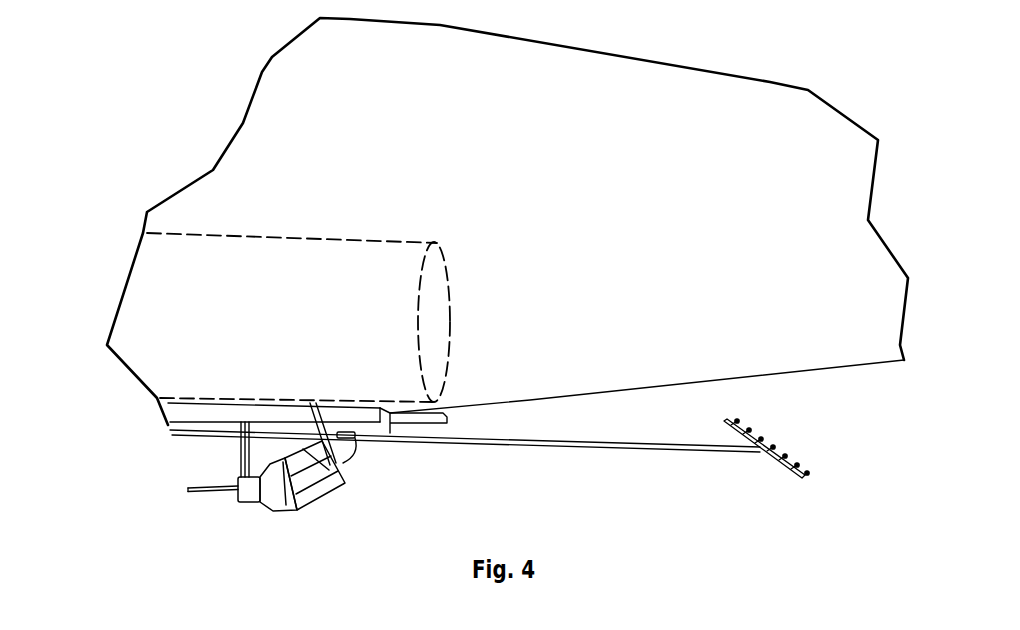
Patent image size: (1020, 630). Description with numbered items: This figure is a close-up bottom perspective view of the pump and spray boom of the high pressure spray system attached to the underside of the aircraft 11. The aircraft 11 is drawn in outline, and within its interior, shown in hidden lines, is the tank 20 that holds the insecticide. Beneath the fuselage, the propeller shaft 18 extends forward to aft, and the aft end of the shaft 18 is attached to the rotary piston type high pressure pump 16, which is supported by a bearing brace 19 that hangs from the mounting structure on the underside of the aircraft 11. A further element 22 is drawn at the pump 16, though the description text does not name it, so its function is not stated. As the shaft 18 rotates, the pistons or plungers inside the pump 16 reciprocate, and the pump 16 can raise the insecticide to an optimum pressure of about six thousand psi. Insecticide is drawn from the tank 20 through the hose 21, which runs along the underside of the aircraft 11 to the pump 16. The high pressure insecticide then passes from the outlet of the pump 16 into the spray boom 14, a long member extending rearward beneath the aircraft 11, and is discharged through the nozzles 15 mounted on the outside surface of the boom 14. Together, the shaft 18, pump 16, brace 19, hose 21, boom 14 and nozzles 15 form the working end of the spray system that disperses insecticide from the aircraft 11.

The aircraft 11 is at (322, 110).
The spray boom 14 is at (465, 480).
The nozzles 15 is at (803, 446).
The high pressure pump 16 is at (294, 511).
The propeller shaft 18 is at (203, 492).
The bearing brace 19 is at (240, 460).
The tank 20 is at (222, 253).
The hose 21 is at (448, 451).
The strap / suspension 22 is at (399, 460).